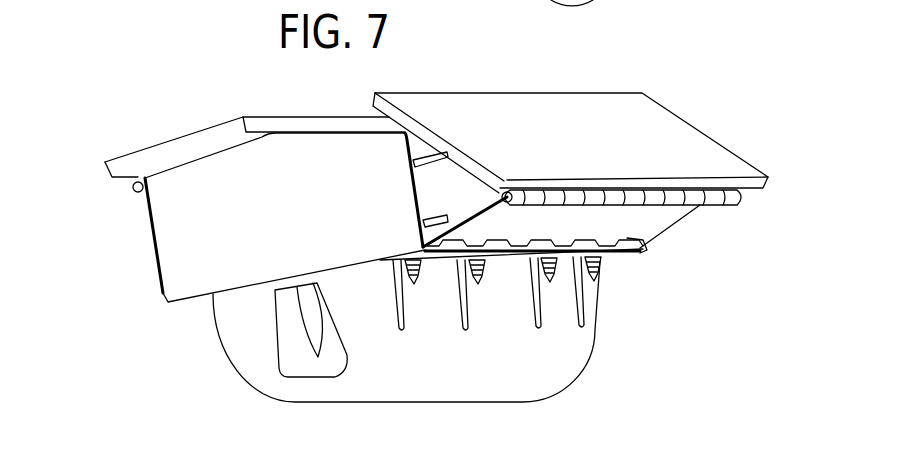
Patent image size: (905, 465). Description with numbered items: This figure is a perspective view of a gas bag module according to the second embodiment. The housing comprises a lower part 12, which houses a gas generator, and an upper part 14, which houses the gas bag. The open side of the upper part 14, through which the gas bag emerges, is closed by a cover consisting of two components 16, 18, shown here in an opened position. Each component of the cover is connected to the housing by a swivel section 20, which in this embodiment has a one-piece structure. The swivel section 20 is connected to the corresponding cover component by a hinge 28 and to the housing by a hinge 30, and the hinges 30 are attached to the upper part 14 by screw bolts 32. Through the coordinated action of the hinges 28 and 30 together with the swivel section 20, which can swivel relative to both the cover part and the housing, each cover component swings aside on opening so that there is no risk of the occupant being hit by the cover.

The lower part 12 is at (413, 372).
The upper part 14 is at (162, 288).
The cover component 16 is at (690, 146).
The cover component 18 is at (178, 142).
The swivel section 20 is at (154, 230).
The hinge 28 is at (136, 190).
The hinge 30 is at (622, 256).
The screw bolt 32 is at (419, 285).